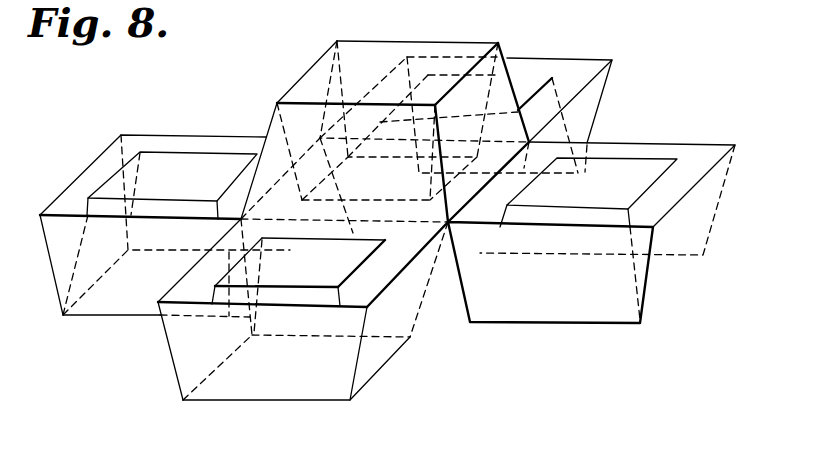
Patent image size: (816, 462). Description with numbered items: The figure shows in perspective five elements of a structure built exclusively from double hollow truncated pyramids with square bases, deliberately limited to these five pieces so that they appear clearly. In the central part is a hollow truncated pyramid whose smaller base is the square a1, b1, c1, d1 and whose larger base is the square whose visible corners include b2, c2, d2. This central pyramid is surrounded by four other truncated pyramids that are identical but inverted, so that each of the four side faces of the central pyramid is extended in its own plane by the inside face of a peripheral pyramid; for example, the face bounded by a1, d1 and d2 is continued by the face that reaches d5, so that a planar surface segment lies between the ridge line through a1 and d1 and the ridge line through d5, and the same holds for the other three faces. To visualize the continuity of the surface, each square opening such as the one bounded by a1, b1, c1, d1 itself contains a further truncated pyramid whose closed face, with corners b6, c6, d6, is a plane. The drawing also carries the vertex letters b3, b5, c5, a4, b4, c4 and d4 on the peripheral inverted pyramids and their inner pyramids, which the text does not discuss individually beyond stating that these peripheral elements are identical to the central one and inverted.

The corner of smaller base a1 is at (338, 130).
The corner of smaller base b1 is at (407, 91).
The corner of smaller base c1 is at (482, 93).
The corner of smaller base d1 is at (442, 161).
The corner of larger base b2 is at (385, 145).
The corner of larger base c2 is at (527, 140).
The corner of larger base d2 is at (358, 236).
The corner of closed planar face b6 is at (389, 177).
The corner of closed planar face c6 is at (469, 156).
The corner of closed planar face d6 is at (429, 199).
The corner b3 of front box b3 is at (254, 309).
The corner b5 of front box bottom b5 is at (264, 378).
The corner c5 of front box c5 is at (378, 364).
The corner of peripheral pyramid face d5 is at (336, 287).
The corner a4 of front platform a4 is at (300, 277).
The corner b4 of front platform b4 is at (372, 261).
The corner c4 of front platform c4 is at (286, 293).
The corner d4 of front platform d4 is at (206, 291).